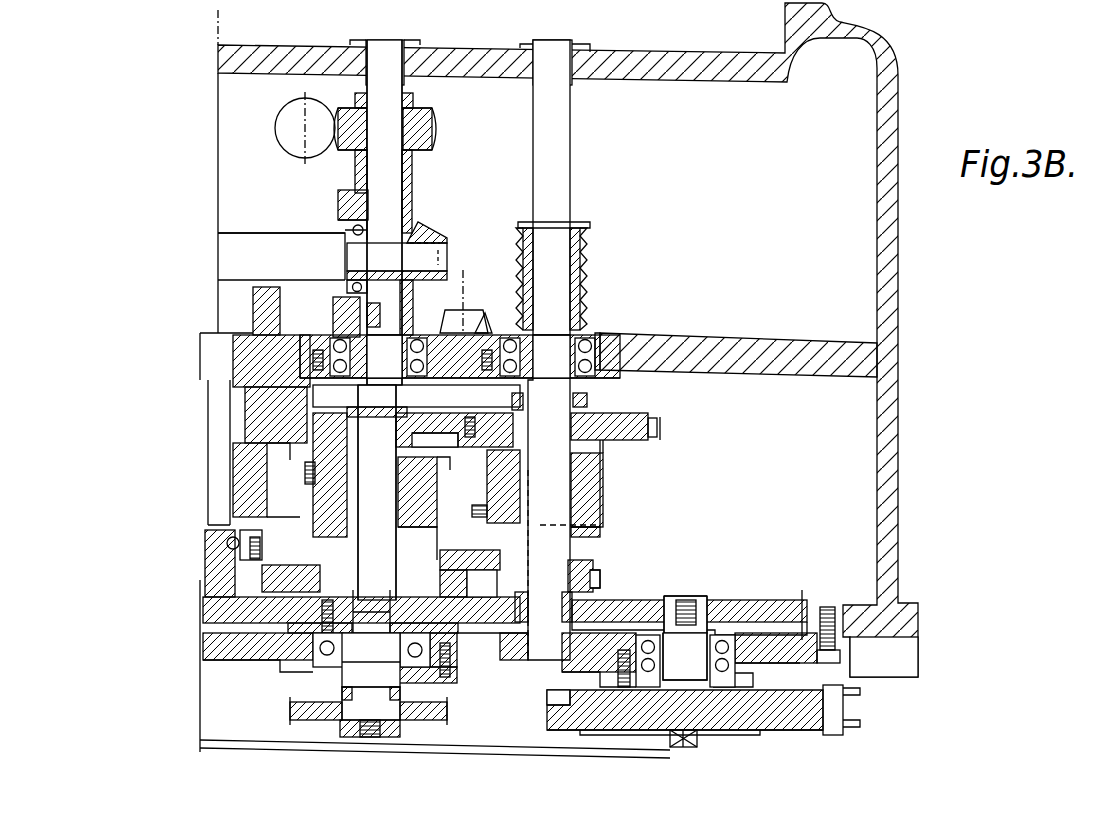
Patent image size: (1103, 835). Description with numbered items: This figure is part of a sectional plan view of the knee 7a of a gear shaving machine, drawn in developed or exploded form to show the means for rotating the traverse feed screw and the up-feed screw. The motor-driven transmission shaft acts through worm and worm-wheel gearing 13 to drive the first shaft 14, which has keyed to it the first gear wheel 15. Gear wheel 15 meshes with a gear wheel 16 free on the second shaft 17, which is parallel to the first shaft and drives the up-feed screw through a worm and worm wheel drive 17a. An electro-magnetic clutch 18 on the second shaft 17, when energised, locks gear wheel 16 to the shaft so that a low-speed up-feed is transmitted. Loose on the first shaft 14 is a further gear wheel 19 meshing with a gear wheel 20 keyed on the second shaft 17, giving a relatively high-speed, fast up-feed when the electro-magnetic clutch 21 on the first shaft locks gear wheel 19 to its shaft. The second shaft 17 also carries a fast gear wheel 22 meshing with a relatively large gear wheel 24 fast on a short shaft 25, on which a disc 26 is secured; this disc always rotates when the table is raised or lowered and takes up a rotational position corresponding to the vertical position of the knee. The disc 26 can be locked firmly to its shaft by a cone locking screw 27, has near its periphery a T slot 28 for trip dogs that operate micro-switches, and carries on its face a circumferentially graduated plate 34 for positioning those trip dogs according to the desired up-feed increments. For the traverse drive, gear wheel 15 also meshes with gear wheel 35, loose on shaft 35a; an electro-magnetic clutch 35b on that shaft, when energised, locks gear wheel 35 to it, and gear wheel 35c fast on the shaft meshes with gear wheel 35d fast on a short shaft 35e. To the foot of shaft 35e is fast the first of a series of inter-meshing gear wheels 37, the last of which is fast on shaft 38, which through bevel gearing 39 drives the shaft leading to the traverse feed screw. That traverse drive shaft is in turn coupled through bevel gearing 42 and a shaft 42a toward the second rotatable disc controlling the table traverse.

The knee 7a is at (888, 258).
The worm and worm-wheel gearing 13 is at (356, 140).
The first shaft 14 is at (390, 173).
The first gear wheel 15 is at (428, 428).
The gear wheel 16 is at (633, 420).
The second shaft 17 is at (550, 508).
The worm and worm wheel drive 17a is at (588, 262).
The electro-magnetic clutch 18 is at (600, 520).
The further gear wheel 19 is at (477, 575).
The gear wheel 20 is at (605, 577).
The electro-magnetic clutch 21 is at (413, 480).
The gear wheel 22 is at (515, 603).
The gear wheel 24 is at (750, 605).
The short shaft 25 is at (697, 666).
The disc 26 is at (585, 710).
The cone locking screw 27 is at (697, 737).
The T slot 28 is at (810, 720).
The circumferentially graduated plate 34 is at (763, 730).
The gear wheel 35 is at (257, 423).
The shaft 35a is at (215, 445).
The electro-magnetic clutch 35b is at (248, 492).
The gear wheel 35c is at (255, 612).
The gear wheel 35d is at (297, 597).
The short shaft 35e is at (385, 675).
The inter-meshing gear wheels 37 is at (290, 710).
The shaft 38 is at (464, 291).
The bevel gearing 39 is at (485, 313).
The bevel gearing 42 is at (430, 243).
The shaft 42a is at (268, 257).